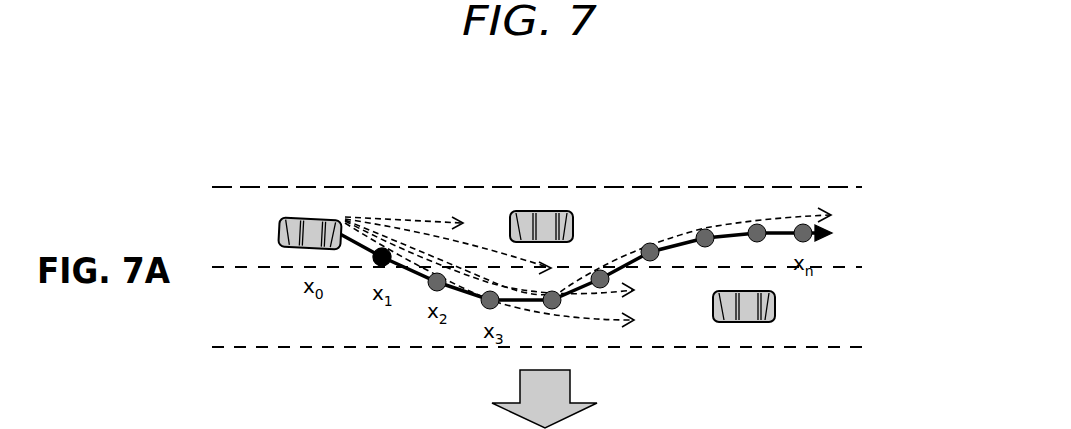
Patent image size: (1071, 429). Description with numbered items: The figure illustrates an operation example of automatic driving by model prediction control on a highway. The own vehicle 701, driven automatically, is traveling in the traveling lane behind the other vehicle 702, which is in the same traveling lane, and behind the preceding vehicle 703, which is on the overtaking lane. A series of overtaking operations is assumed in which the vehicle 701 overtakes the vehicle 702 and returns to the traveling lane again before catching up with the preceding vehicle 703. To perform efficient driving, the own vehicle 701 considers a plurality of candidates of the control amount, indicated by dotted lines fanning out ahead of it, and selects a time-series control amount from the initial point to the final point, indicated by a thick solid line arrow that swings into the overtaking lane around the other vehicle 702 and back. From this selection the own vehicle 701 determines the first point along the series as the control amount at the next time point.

The own vehicle 701 is at (310, 219).
The other vehicle 702 is at (543, 211).
The preceding vehicle 703 is at (744, 322).